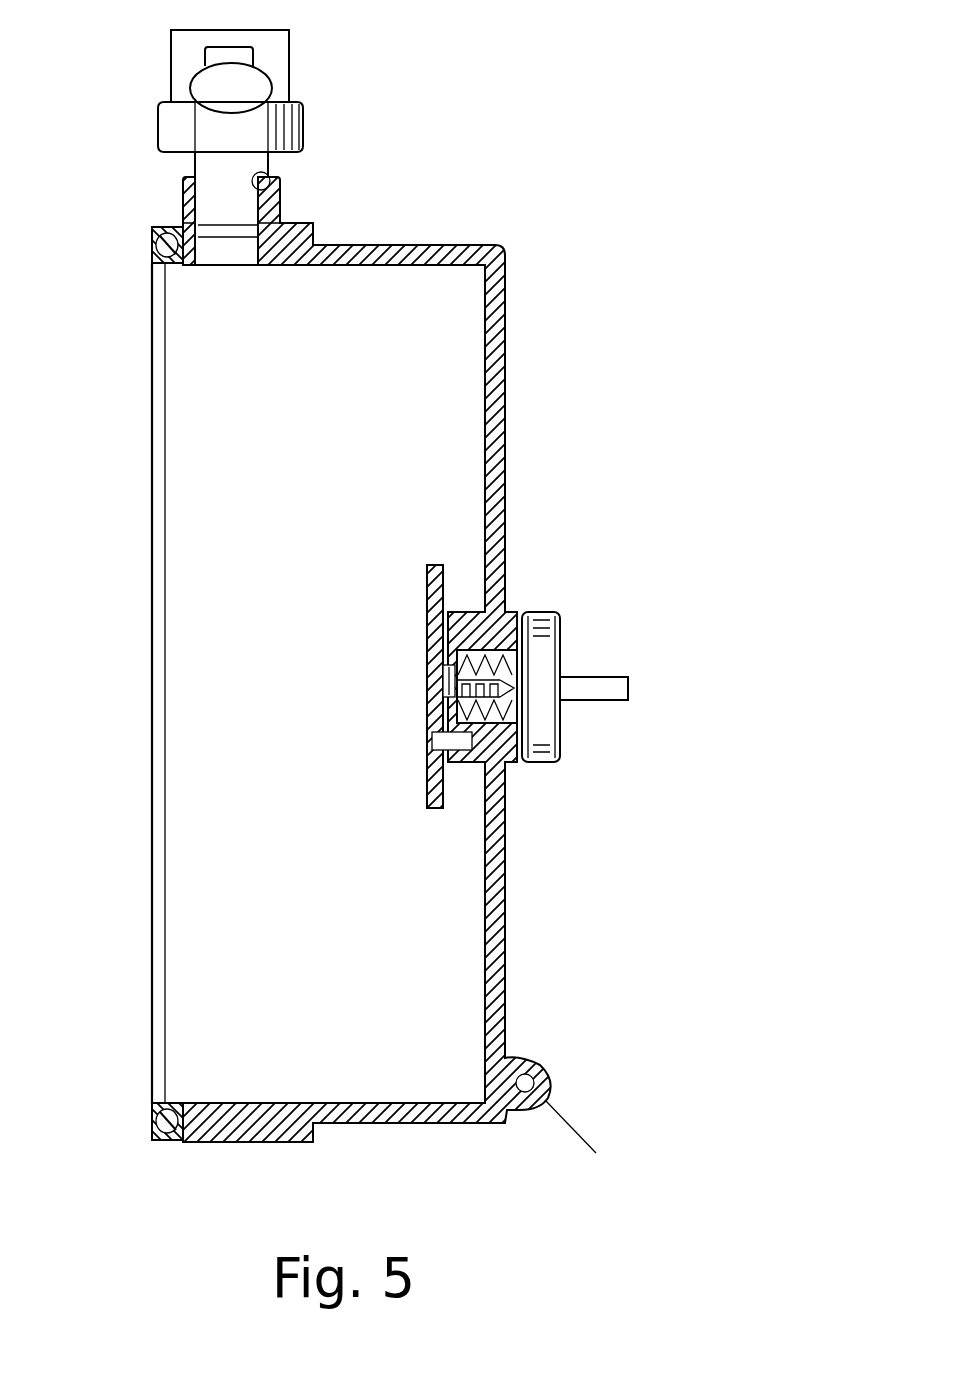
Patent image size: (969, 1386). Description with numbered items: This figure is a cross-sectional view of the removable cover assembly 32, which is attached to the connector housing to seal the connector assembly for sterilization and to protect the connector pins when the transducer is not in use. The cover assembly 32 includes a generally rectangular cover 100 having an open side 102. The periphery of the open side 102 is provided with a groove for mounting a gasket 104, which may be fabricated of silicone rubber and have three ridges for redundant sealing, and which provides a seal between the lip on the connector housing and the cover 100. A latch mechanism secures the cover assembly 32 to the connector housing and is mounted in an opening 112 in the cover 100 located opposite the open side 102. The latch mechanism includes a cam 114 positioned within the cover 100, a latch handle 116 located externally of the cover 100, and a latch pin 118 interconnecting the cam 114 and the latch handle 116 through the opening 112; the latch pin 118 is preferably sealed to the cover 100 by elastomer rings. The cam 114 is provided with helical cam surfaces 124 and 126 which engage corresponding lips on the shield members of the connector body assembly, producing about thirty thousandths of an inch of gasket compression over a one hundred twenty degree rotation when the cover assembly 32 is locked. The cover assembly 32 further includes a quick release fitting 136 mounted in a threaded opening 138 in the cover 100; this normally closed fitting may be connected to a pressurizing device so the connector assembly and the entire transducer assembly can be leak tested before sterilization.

The cover assembly 32 is at (466, 247).
The cover 100 is at (505, 467).
The open side 102 is at (185, 672).
The gasket 104 is at (153, 238).
The opening 112 is at (476, 612).
The cam 114 is at (428, 780).
The latch handle 116 is at (588, 677).
The latch pin 118 is at (512, 722).
The helical cam surface 124 is at (447, 802).
The helical cam surface 126 is at (447, 572).
The quick release fitting 136 is at (292, 70).
The threaded opening 138 is at (270, 180).